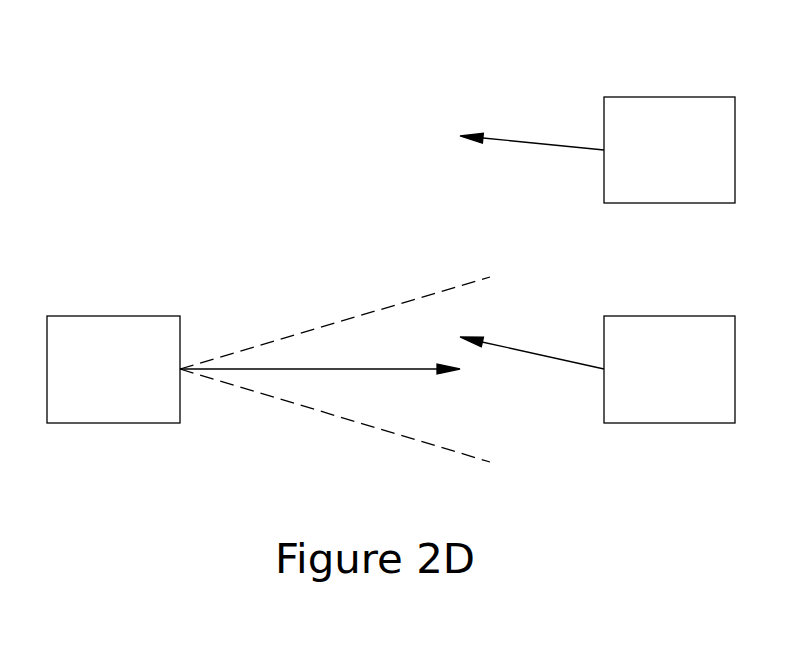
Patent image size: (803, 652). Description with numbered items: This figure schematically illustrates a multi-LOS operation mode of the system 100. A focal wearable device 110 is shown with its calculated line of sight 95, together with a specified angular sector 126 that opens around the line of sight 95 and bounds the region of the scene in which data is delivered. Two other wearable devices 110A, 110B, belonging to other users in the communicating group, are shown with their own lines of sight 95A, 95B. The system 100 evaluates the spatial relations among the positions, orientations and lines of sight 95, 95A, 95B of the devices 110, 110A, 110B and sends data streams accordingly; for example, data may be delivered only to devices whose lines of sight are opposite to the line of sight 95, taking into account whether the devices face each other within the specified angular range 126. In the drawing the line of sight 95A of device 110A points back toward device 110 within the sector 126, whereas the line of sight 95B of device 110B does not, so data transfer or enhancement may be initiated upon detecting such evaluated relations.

The system 100 is at (88, 32).
The wearable device 110 is at (118, 316).
The wearable device of other user 110A is at (691, 316).
The wearable device of other user 110B is at (691, 97).
The specified sector 126 is at (242, 362).
The line of sight 95 is at (267, 370).
The line of sight 95A is at (550, 362).
The line of sight 95B is at (553, 148).